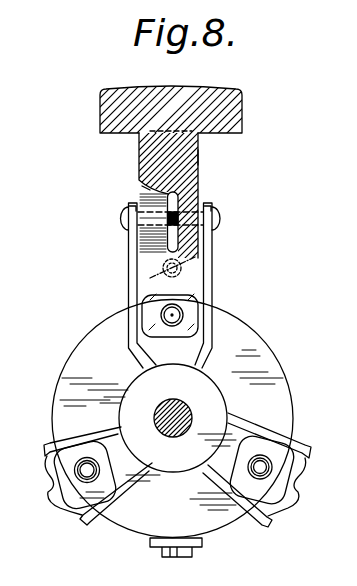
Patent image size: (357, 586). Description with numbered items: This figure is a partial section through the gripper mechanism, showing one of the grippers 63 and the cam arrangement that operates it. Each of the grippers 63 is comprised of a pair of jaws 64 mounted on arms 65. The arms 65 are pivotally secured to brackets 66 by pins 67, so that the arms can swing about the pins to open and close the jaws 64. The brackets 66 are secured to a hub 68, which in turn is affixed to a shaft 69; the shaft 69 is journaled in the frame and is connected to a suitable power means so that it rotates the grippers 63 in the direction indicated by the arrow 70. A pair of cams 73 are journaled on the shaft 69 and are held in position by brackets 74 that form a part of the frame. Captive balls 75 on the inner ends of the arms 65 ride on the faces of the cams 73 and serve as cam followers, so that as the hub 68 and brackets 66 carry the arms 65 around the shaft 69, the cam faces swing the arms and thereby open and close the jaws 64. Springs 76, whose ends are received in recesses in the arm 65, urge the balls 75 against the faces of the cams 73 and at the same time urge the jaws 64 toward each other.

The grippers 63 is at (130, 160).
The jaws 64 is at (203, 104).
The arms 65 is at (198, 160).
The brackets 66 is at (129, 260).
The pins 67 is at (219, 219).
The hub 68 is at (212, 388).
The shaft 69 is at (192, 409).
The arrow 70 is at (47, 348).
The cams 73 is at (186, 516).
The brackets 74 is at (204, 547).
The captive balls 75 is at (180, 313).
The springs 76 is at (218, 243).